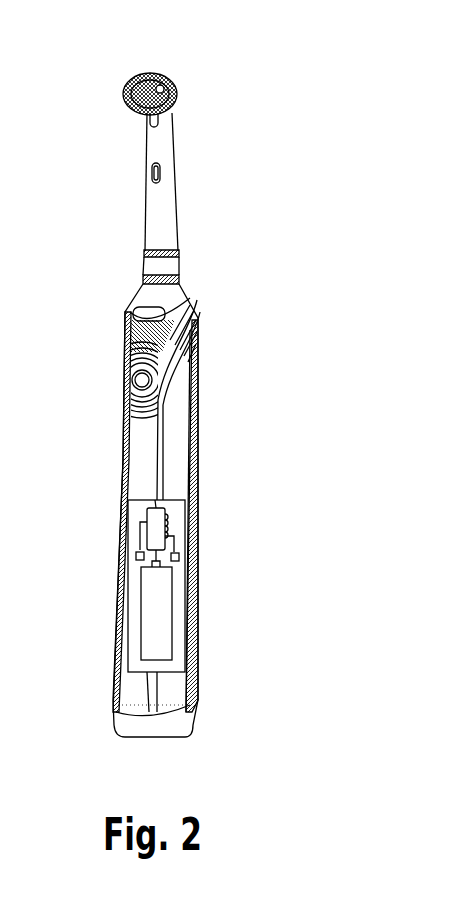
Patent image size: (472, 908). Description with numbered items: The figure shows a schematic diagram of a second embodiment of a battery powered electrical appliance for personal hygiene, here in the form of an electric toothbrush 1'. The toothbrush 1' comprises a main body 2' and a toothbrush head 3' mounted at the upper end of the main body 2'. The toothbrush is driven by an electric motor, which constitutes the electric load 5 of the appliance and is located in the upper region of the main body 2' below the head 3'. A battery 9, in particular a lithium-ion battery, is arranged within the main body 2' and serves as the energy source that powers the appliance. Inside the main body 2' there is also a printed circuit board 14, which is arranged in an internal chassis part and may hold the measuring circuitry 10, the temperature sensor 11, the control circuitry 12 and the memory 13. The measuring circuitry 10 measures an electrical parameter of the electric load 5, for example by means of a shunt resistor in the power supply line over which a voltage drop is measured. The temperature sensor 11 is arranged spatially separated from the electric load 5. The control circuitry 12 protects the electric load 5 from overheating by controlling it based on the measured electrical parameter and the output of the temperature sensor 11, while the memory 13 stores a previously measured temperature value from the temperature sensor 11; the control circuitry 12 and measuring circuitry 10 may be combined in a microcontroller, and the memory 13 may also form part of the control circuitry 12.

The electric toothbrush 1' is at (186, 370).
The main body 2' is at (186, 510).
The toothbrush head 3' is at (128, 178).
The electric load 5 is at (200, 320).
The battery 9 is at (162, 626).
The measuring circuitry 10 is at (233, 539).
The temperature sensor 11 is at (183, 556).
The control circuitry 12 is at (183, 530).
The memory 13 is at (127, 556).
The printed circuit board 14 is at (183, 503).